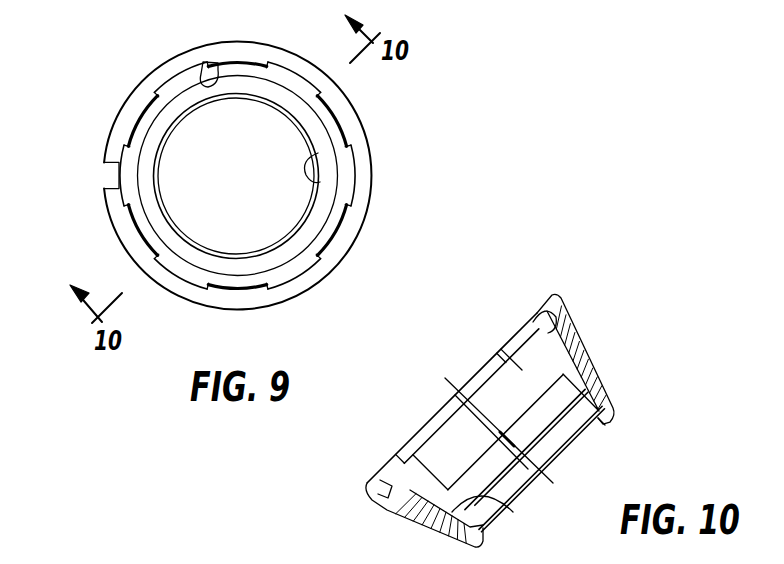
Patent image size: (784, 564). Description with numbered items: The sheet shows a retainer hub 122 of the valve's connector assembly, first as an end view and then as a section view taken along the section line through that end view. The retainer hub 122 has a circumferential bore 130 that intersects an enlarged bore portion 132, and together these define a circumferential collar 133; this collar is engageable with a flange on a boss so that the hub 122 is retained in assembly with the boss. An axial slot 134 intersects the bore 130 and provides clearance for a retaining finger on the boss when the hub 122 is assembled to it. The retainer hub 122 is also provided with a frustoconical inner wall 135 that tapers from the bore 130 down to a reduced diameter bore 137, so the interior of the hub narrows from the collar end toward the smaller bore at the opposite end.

In FIG. 9, the retainer hub 122 is at (365, 115).
In FIG. 10, the retainer hub 122 is at (583, 332).
In FIG. 9, the circumferential bore 130 is at (202, 84).
In FIG. 10, the circumferential bore 130 is at (538, 312).
In FIG. 10, the enlarged bore portion 132 is at (378, 500).
In FIG. 10, the circumferential collar 133 is at (530, 333).
In FIG. 9, the axial slot 134 is at (104, 162).
In FIG. 9, the frustoconical inner wall 135 is at (291, 253).
In FIG. 10, the frustoconical inner wall 135 is at (513, 512).
In FIG. 9, the reduced diameter bore 137 is at (306, 187).
In FIG. 10, the reduced diameter bore 137 is at (600, 418).